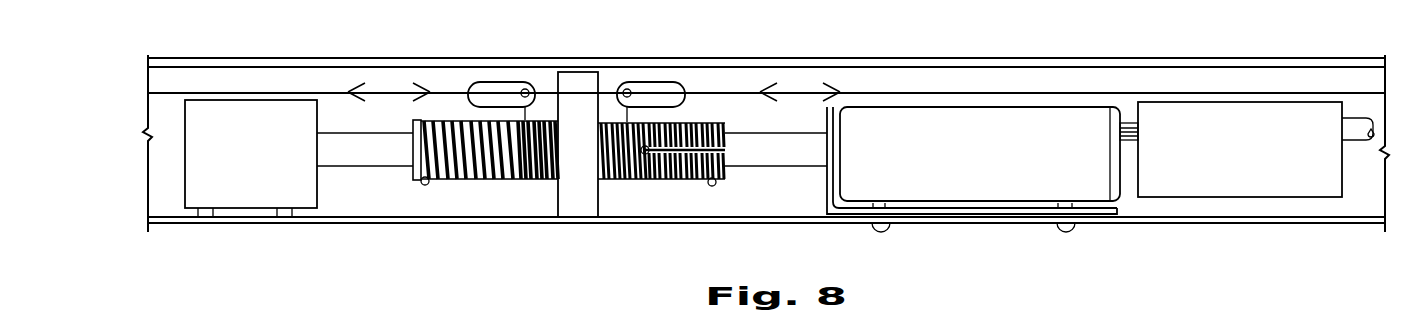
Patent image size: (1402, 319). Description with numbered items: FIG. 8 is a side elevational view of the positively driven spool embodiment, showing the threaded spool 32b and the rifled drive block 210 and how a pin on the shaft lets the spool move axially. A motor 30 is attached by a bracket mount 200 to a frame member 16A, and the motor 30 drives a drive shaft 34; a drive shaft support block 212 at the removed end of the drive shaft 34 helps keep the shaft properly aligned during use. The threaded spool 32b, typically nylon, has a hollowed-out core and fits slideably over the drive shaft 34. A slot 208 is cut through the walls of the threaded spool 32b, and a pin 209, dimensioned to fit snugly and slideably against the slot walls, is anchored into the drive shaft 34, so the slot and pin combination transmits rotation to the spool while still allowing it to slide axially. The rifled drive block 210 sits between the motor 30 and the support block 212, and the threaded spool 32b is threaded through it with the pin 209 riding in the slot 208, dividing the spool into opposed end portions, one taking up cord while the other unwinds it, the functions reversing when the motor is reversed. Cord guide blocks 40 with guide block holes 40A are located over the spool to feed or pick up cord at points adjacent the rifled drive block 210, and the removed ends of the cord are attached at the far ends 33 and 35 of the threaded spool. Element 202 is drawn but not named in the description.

The frame member 16A is at (878, 58).
The drive shaft support block 212 is at (267, 165).
The drive shaft 34 is at (370, 164).
The threaded spool 32b is at (540, 180).
The far end of threaded spool 33 is at (424, 185).
The pin 209 is at (675, 182).
The slot 208 is at (721, 150).
The far end of threaded spool 35 is at (714, 186).
The rifled drive block 210 is at (575, 202).
The cord guide block 40 is at (493, 86).
The guide block hole 40A is at (627, 88).
The motor 30 is at (980, 166).
The bracket mount 200 is at (1003, 210).
The motor 202 is at (1262, 159).